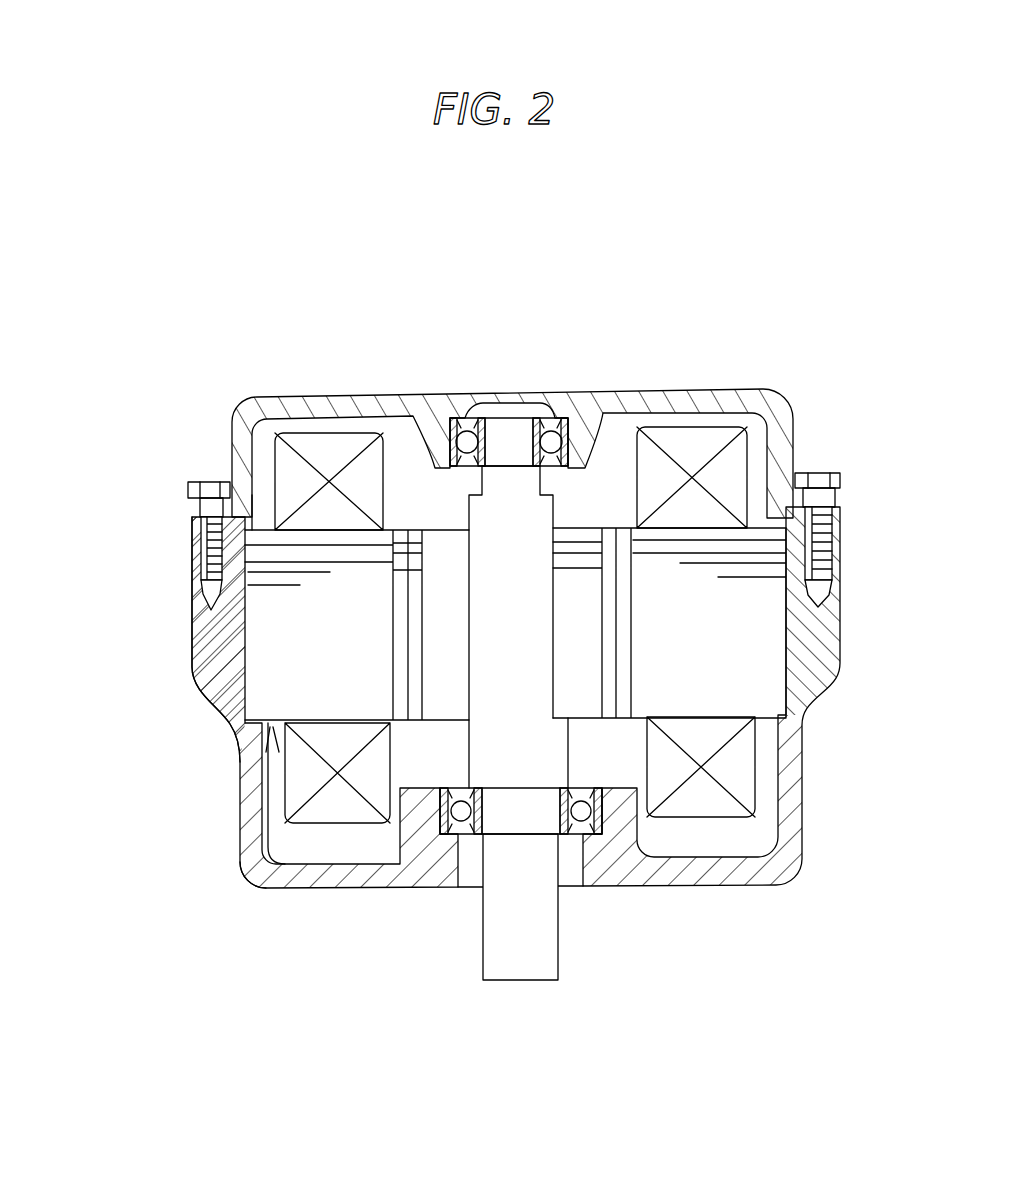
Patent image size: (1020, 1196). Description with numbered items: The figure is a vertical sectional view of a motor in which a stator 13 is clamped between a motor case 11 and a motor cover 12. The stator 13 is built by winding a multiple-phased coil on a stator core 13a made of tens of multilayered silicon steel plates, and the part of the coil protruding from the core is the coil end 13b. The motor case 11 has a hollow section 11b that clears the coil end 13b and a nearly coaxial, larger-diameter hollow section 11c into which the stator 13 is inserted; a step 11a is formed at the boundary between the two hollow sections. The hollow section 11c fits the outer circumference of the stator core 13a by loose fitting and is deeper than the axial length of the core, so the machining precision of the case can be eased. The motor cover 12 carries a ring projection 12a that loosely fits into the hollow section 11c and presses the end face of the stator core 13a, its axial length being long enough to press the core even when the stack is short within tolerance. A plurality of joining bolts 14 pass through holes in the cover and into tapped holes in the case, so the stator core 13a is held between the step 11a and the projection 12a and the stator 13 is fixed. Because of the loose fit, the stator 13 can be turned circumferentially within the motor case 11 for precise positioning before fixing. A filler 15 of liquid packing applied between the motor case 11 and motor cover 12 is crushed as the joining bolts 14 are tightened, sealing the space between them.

The motor case 11 is at (373, 877).
The step 11a is at (233, 736).
The hollow section to clear the coil end 11b is at (313, 840).
The hollow section for inserting the stator 11c is at (765, 632).
The motor cover 12 is at (649, 397).
The ring projection 12a is at (262, 524).
The stator 13 is at (240, 870).
The stator core 13a is at (282, 651).
The coil end 13b is at (370, 477).
The joining bolts 14 is at (814, 473).
The filler 15 is at (196, 512).